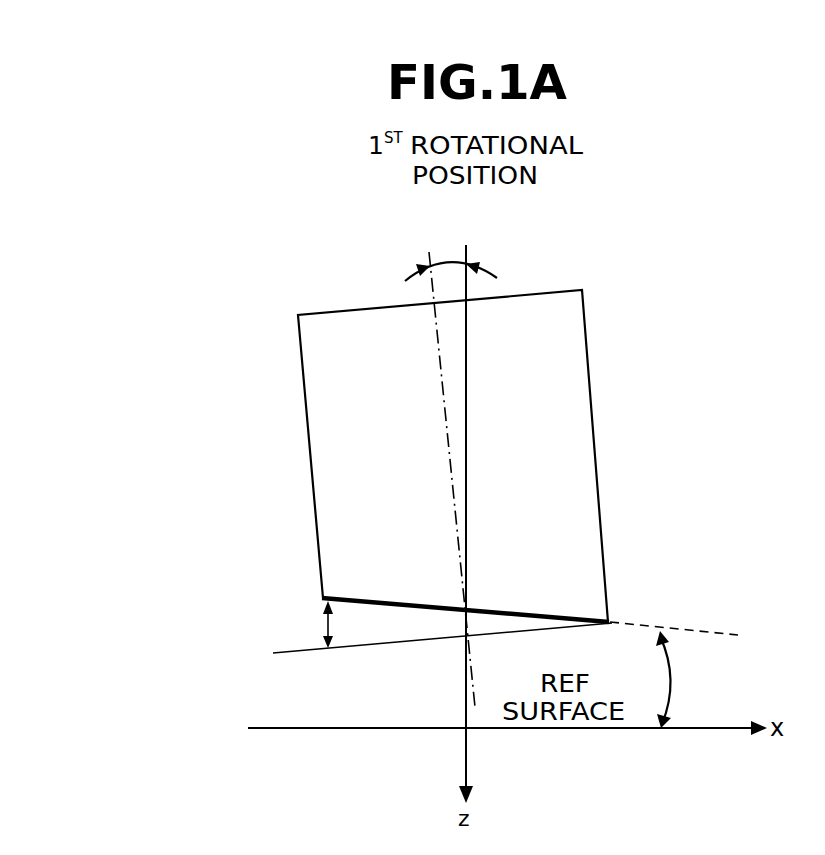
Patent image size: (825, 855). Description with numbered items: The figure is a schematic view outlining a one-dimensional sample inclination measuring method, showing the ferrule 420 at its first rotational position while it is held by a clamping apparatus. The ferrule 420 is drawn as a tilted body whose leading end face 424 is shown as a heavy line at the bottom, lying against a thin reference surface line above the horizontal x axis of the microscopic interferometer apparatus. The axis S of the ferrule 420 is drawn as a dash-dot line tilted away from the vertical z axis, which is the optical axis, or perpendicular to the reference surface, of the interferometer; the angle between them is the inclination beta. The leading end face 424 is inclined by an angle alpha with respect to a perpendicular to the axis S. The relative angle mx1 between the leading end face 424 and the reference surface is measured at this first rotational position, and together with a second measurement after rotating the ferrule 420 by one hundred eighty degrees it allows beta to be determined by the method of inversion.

The ferrule 420 is at (577, 370).
The leading end face 424 is at (392, 610).
The axis s is at (442, 393).
The relative angle mx1 is at (686, 679).